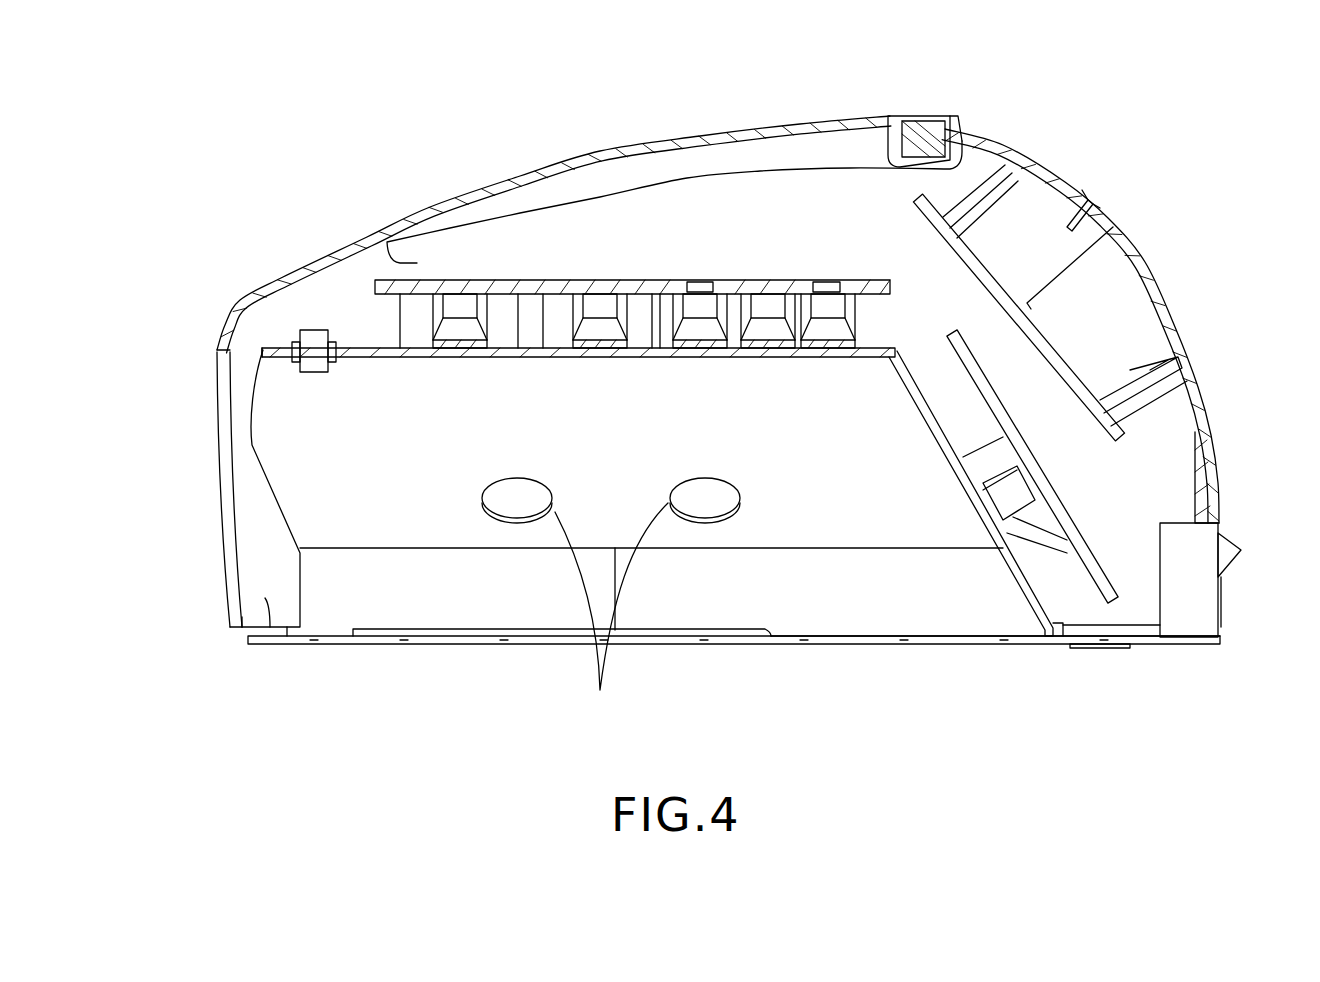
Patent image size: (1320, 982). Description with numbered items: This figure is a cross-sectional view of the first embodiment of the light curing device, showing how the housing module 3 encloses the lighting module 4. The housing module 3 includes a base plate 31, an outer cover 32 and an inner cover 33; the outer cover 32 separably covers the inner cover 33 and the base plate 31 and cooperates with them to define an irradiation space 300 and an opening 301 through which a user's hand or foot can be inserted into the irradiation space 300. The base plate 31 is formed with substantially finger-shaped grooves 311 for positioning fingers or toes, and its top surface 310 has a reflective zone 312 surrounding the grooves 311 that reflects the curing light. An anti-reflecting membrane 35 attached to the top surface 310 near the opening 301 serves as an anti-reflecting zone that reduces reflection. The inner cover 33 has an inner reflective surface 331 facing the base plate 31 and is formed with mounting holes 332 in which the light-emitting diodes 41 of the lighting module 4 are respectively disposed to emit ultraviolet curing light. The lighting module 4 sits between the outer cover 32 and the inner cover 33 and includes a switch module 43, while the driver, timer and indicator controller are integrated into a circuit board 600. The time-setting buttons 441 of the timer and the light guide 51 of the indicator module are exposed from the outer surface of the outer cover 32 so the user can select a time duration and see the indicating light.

The housing module 3 is at (628, 130).
The outer cover 32 is at (509, 185).
The light guide 51 is at (915, 128).
The time-setting buttons 441 is at (1140, 253).
The irradiation space 300 is at (300, 467).
The opening 301 is at (226, 378).
The anti-reflecting membrane 35 is at (265, 598).
The top surface 310 is at (1003, 622).
The mounting holes 332 is at (583, 350).
The inner cover 33 is at (367, 350).
The inner reflective surface 331 is at (280, 370).
The switch module 43 is at (311, 338).
The lighting module 4 is at (461, 275).
The light-emitting diodes 41 is at (603, 330).
The base plate 31 is at (887, 645).
The grooves 311 is at (553, 633).
The reflective zone 312 is at (806, 635).
The circuit board 600 is at (1063, 290).